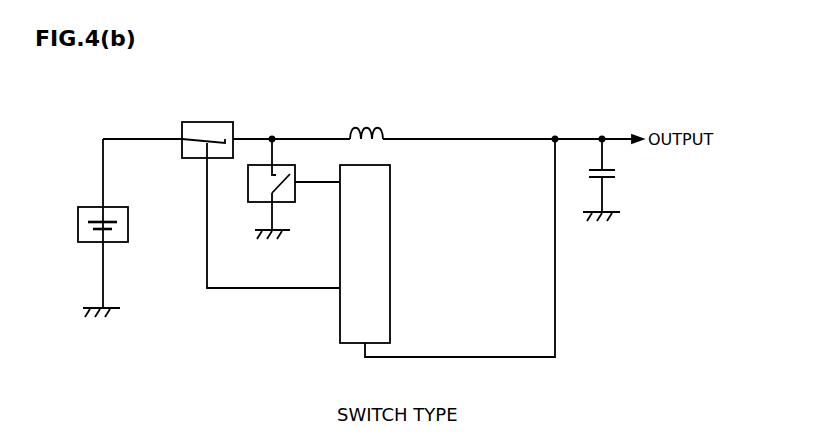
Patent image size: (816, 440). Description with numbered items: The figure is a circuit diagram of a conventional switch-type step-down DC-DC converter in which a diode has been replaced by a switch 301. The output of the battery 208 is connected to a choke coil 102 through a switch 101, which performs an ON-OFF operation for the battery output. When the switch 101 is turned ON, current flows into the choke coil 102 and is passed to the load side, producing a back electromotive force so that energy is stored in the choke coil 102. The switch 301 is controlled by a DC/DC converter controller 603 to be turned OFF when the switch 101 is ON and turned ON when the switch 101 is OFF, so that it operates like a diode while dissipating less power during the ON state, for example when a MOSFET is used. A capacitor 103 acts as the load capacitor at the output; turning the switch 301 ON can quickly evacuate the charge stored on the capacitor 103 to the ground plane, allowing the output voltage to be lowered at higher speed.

The switch 101 is at (192, 158).
The choke coil 102 is at (355, 129).
The capacitor 103 is at (617, 173).
The battery 208 is at (120, 243).
The switch 301 is at (252, 207).
The DC/DC converter controller 603 is at (340, 308).